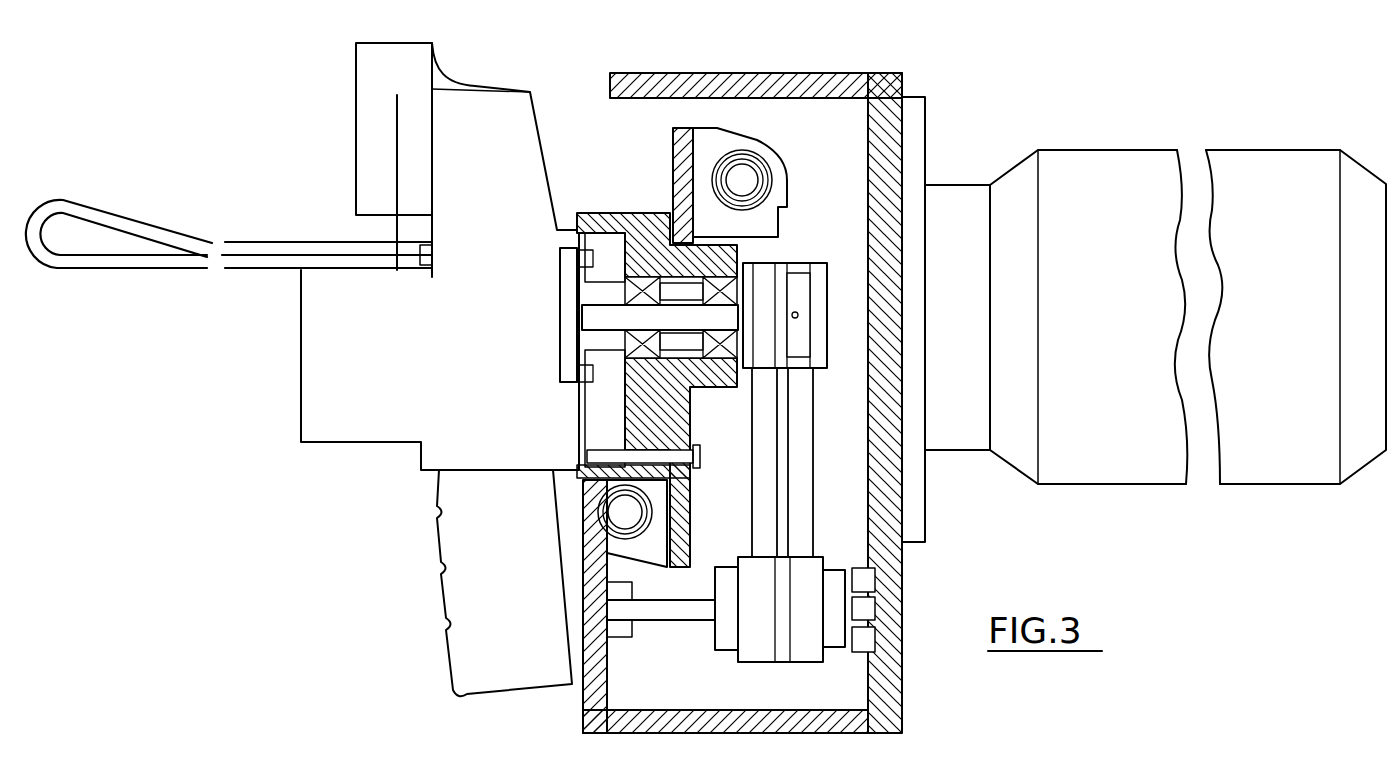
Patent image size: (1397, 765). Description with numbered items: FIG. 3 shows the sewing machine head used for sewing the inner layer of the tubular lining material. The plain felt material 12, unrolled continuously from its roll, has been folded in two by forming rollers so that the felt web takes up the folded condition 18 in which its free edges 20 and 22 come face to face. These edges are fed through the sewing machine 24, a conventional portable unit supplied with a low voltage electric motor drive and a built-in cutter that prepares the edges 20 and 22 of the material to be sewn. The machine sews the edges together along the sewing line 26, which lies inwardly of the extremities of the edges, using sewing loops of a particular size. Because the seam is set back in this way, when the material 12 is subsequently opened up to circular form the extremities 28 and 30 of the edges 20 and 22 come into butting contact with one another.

The roll of plain felt 12 is at (63, 266).
The folded felt web 18 is at (80, 206).
The free edge 20 is at (362, 246).
The free edge 22 is at (374, 262).
The sewing machine 24 is at (552, 169).
The sewing line 26 is at (397, 232).
The extremity of edge 28 is at (423, 243).
The extremity of edge 30 is at (423, 260).